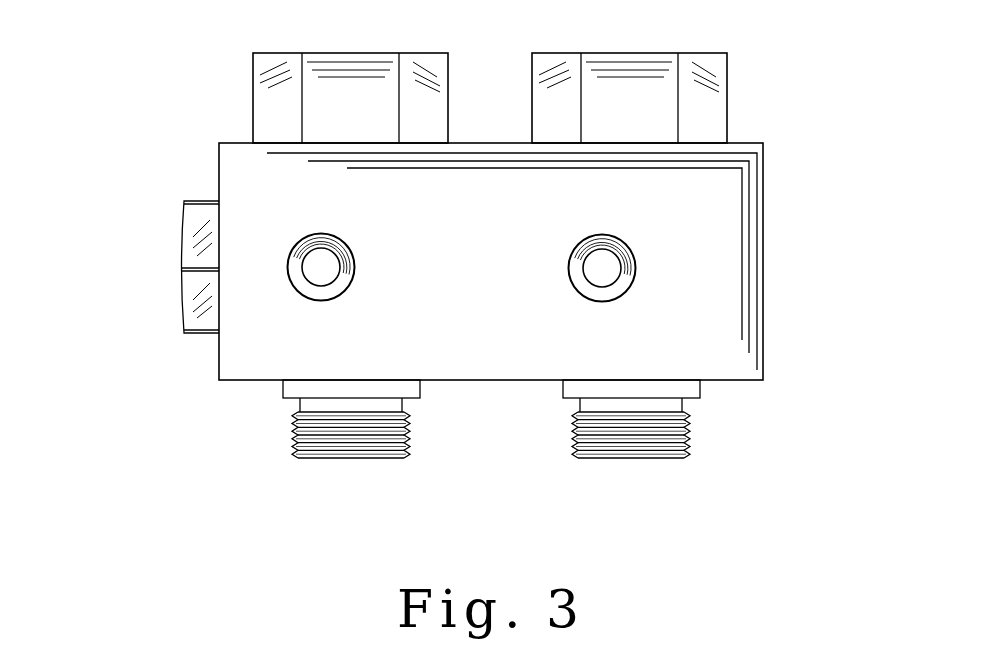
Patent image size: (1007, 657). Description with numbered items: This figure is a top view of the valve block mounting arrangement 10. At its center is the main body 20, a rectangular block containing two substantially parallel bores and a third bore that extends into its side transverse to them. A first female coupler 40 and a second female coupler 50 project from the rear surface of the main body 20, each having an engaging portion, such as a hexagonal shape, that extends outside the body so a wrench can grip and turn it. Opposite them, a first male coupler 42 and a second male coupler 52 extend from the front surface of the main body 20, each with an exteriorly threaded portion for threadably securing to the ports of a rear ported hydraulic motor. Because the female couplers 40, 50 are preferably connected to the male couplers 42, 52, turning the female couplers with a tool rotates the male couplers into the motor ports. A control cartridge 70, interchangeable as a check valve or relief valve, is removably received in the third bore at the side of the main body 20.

The valve block mounting arrangement 10 is at (116, 93).
The main body 20 is at (712, 238).
The first female coupler 40 is at (280, 88).
The first male coupler 42 is at (300, 452).
The second female coupler 50 is at (722, 63).
The second male coupler 52 is at (690, 437).
The control cartridge 70 is at (199, 321).